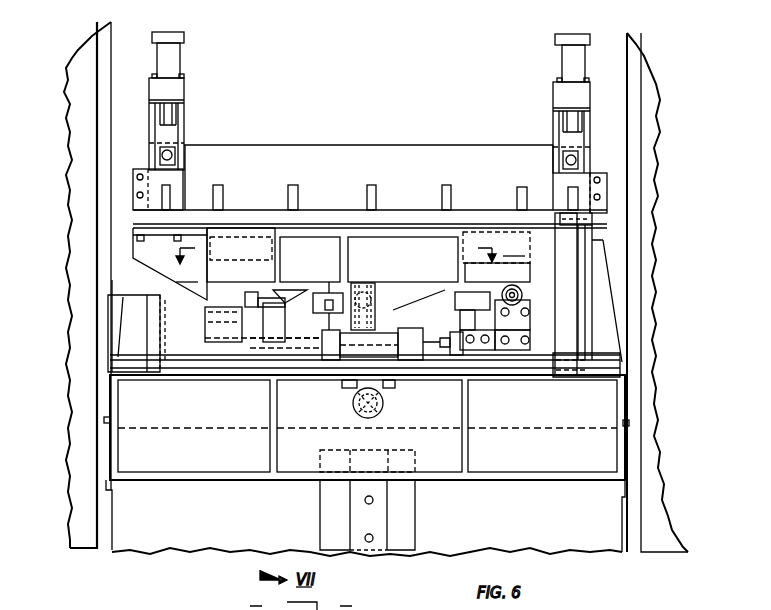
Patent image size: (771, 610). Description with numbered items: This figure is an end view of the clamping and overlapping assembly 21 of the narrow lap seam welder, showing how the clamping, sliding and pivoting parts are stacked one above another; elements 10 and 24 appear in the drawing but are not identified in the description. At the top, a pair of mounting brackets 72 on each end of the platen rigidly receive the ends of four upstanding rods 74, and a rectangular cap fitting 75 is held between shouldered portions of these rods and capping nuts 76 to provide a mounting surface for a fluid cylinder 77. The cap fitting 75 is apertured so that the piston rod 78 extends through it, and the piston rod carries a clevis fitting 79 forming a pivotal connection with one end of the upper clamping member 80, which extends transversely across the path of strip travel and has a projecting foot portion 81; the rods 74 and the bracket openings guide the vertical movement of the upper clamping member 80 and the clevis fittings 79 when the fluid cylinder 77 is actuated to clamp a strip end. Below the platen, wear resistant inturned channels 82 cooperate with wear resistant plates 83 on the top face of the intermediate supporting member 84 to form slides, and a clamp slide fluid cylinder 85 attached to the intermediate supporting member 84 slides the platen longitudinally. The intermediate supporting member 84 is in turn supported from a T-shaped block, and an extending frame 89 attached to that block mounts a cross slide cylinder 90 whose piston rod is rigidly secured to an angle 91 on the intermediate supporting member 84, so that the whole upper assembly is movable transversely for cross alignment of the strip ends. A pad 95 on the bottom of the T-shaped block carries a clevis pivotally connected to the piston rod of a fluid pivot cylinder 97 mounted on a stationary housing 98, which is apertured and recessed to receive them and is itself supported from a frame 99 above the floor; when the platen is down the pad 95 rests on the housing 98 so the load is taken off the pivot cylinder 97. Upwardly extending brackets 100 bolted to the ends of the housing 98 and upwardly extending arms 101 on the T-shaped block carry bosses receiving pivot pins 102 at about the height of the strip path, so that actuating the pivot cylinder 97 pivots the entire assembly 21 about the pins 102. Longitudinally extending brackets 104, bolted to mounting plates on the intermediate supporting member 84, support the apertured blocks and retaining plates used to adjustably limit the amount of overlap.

The housing 10 is at (408, 228).
The clamping and overlapping assembly 21 is at (272, 18).
The side wall 24 is at (80, 90).
The mounting brackets 72 is at (133, 205).
The upstanding rods 74 is at (560, 118).
The cap fitting 75 is at (160, 90).
The capping nuts 76 is at (182, 76).
The fluid cylinder 77 is at (167, 47).
The piston rod 78 is at (167, 115).
The clevis fitting 79 is at (160, 138).
The upper clamping member 80 is at (330, 152).
The projecting foot portion 81 is at (385, 215).
The inturned channels 82 is at (252, 300).
The wear resistant plates 83 is at (280, 300).
The intermediate supporting member 84 is at (160, 298).
The clamp slide fluid cylinder 85 is at (363, 290).
The extending frame 89 is at (322, 352).
The cross slide cylinder 90 is at (395, 345).
The angle 91 is at (455, 352).
The pad 95 is at (350, 365).
The pivot cylinder 97 is at (355, 408).
The stationary housing 98 is at (138, 405).
The frame 99 is at (190, 540).
The upwardly extending brackets 100 is at (133, 350).
The upwardly extending arms 101 is at (165, 322).
The pivot pins 102 is at (600, 222).
The longitudinally extending brackets 104 is at (228, 336).